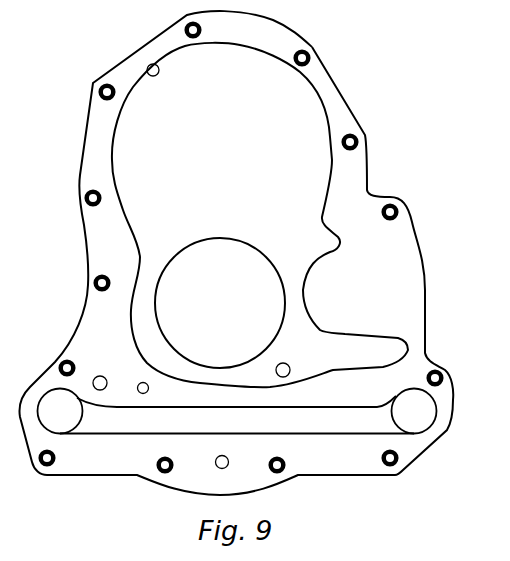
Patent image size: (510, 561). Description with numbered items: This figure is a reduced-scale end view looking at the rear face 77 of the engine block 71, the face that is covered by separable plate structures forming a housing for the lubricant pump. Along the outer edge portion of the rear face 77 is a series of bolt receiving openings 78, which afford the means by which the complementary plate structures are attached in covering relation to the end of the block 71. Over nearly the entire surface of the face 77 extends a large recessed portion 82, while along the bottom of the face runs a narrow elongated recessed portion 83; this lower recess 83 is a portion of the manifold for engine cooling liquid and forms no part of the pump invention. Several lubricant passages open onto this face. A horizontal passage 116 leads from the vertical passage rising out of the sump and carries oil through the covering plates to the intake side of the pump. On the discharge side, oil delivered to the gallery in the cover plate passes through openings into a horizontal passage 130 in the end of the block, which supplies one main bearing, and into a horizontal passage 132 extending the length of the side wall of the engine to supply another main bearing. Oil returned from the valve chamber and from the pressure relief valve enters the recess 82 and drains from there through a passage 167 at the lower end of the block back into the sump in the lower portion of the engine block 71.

The engine block 71 is at (339, 90).
The rear face 77 is at (403, 247).
The bolt receiving openings 78 is at (100, 203).
The recessed portion 82 is at (149, 64).
The narrow elongated recessed portion 83 is at (311, 410).
The horizontal passage 116 is at (142, 383).
The horizontal passage 130 is at (226, 459).
The horizontal passage 132 is at (105, 367).
The passage 167 is at (290, 367).